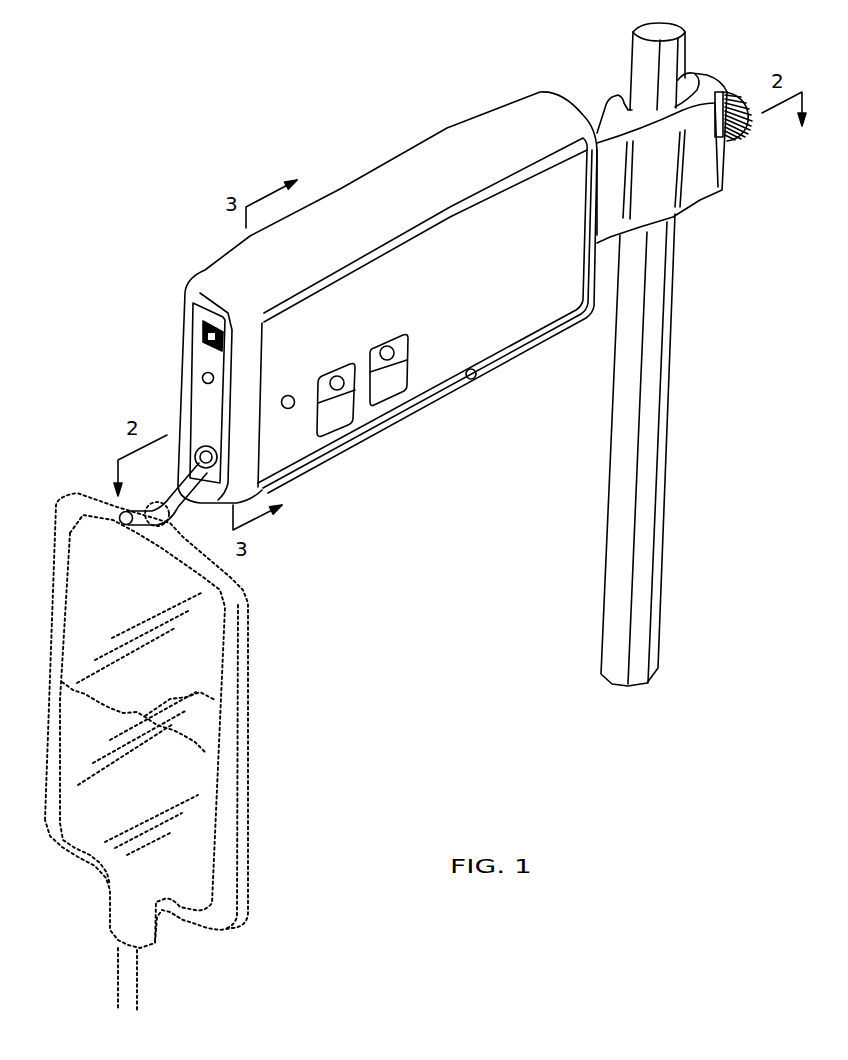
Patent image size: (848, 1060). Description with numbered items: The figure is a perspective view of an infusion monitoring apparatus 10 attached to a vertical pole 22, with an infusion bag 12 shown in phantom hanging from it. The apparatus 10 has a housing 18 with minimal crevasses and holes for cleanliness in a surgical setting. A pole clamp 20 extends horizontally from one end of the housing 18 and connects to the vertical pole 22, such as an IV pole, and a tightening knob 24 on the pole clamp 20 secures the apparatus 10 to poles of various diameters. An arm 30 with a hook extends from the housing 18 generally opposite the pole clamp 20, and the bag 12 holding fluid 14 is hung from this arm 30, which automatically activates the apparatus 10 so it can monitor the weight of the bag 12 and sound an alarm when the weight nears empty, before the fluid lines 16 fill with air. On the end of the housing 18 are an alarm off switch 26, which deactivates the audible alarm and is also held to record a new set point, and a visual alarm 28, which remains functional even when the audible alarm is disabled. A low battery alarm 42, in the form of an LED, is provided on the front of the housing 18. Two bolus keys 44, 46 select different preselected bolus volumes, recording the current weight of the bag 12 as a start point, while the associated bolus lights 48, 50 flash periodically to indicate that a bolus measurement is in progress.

The infusion monitoring apparatus 10 is at (360, 84).
The infusion bag 12 is at (247, 675).
The fluid 14 is at (193, 811).
The fluid lines 16 is at (135, 975).
The housing 18 is at (474, 379).
The pole clamp 20 is at (690, 200).
The vertical pole 22 is at (656, 348).
The tightening knob 24 is at (748, 140).
The alarm off switch 26 is at (202, 333).
The visual alarm 28 is at (202, 378).
The arm 30 is at (177, 481).
The low battery alarm 42 is at (293, 408).
The bolus key 44 is at (335, 436).
The bolus key 46 is at (382, 409).
The bolus light 48 is at (338, 377).
The bolus light 50 is at (387, 346).